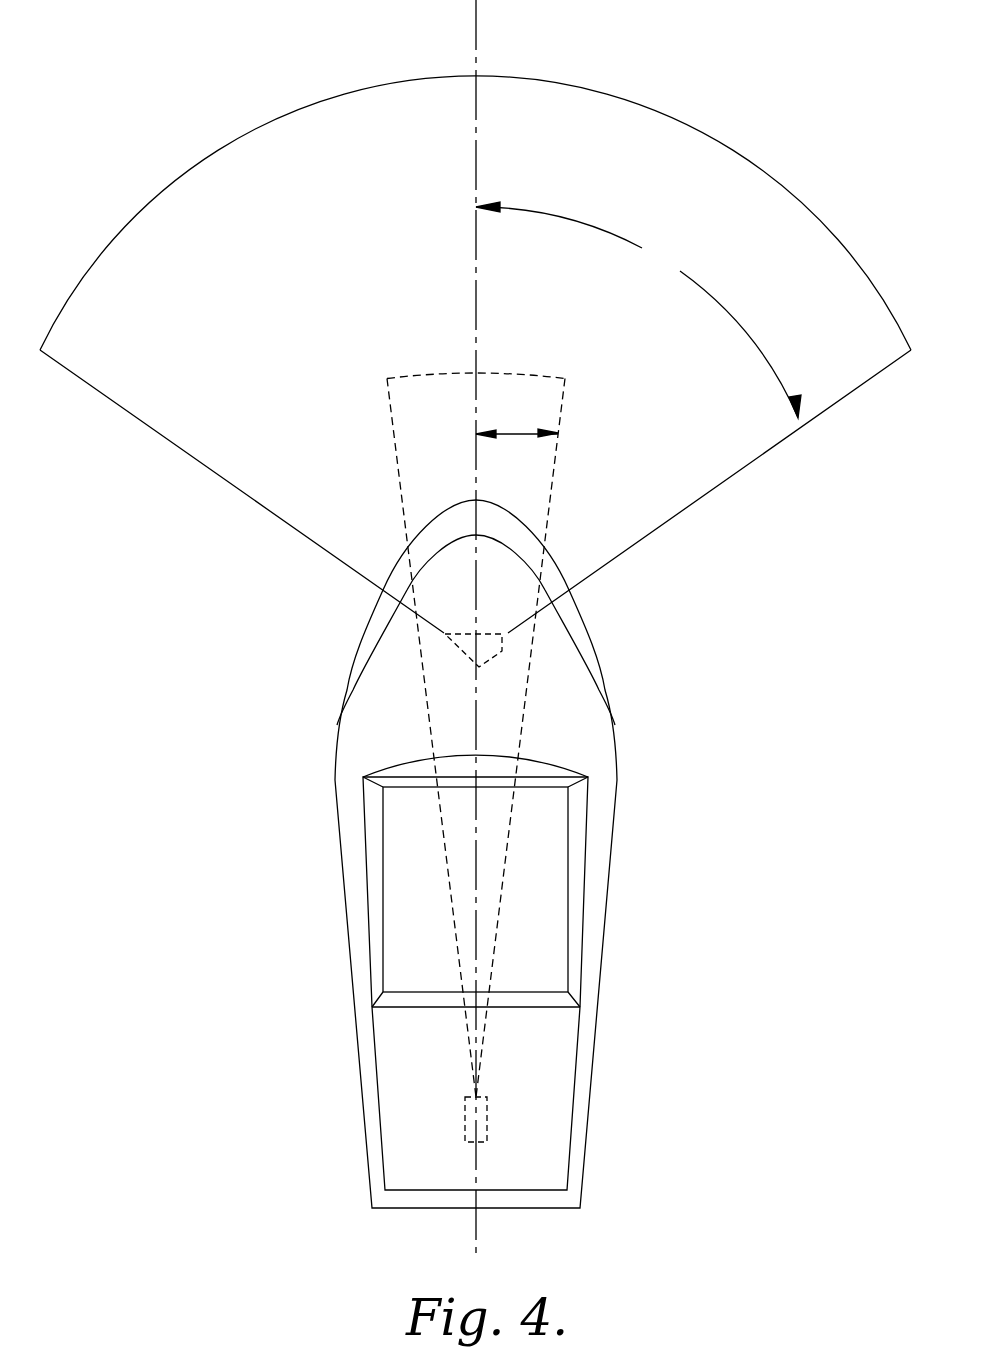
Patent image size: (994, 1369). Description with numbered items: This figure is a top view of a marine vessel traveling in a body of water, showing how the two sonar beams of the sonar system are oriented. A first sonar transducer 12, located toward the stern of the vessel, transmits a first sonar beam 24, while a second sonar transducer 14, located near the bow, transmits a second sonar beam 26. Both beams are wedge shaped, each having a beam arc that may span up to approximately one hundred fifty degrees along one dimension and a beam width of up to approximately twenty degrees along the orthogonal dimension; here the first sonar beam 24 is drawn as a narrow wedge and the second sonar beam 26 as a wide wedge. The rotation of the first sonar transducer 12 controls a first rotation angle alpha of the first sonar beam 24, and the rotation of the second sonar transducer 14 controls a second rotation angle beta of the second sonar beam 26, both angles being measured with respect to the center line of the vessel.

The first sonar transducer 12 is at (470, 1113).
The second sonar transducer 14 is at (470, 649).
The first sonar beam 24 is at (433, 383).
The second sonar beam 26 is at (730, 151).